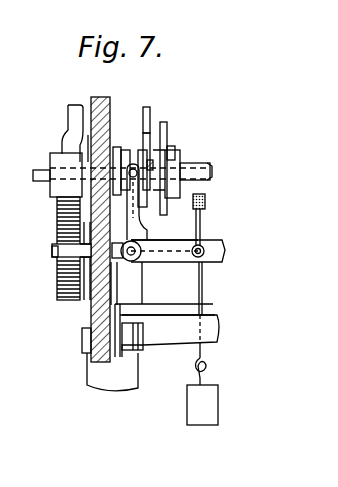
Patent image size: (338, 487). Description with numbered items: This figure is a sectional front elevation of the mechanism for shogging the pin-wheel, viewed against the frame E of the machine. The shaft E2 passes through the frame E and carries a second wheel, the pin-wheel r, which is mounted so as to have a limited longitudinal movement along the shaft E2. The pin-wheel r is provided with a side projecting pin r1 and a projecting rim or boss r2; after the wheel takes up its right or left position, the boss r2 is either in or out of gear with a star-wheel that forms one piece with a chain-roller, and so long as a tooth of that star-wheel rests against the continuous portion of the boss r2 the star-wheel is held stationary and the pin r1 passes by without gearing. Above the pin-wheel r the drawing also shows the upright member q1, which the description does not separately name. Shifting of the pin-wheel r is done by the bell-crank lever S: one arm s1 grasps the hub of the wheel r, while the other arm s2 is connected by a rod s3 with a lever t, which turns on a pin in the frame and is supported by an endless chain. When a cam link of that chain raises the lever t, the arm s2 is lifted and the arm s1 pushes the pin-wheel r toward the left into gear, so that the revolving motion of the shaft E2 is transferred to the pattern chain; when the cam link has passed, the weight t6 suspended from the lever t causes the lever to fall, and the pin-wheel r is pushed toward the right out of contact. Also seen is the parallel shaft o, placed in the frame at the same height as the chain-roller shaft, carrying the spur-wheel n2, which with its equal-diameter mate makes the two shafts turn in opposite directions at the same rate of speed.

The frame E is at (80, 117).
The shaft E2 is at (33, 174).
The spur-wheel n2 is at (60, 293).
The shaft o is at (53, 251).
The bell-crank lever S is at (157, 254).
The arm s1 is at (138, 211).
The arm s2 is at (173, 250).
The rod s3 is at (203, 223).
The lever t is at (205, 200).
The rod q1 is at (148, 111).
The projecting rim or boss r2 is at (150, 148).
The pin-wheel r is at (166, 133).
The pin r1 is at (175, 155).
The weight t6 is at (208, 405).